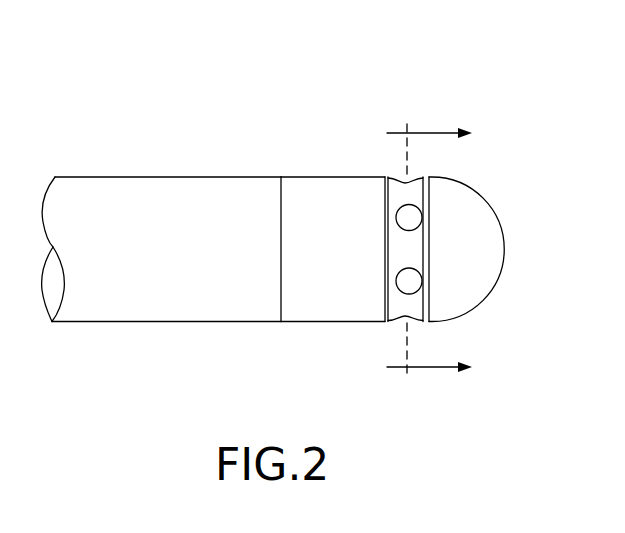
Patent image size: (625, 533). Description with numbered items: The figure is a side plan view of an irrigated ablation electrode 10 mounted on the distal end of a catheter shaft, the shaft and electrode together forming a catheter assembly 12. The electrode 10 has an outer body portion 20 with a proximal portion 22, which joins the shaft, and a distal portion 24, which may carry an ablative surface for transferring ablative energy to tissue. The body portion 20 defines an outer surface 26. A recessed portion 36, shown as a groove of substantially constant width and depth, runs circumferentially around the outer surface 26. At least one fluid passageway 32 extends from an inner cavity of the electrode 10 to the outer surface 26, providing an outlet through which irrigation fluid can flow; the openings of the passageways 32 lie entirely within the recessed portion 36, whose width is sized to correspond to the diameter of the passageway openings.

The ablation electrode 10 is at (434, 90).
The catheter assembly 12 is at (95, 139).
The proximal portion 22 is at (291, 155).
The outer surface 26 is at (338, 177).
The outer body portion 20 is at (296, 352).
The distal portion 24 is at (498, 171).
The fluid passageway 32 is at (410, 215).
The recessed portion 36 is at (403, 258).